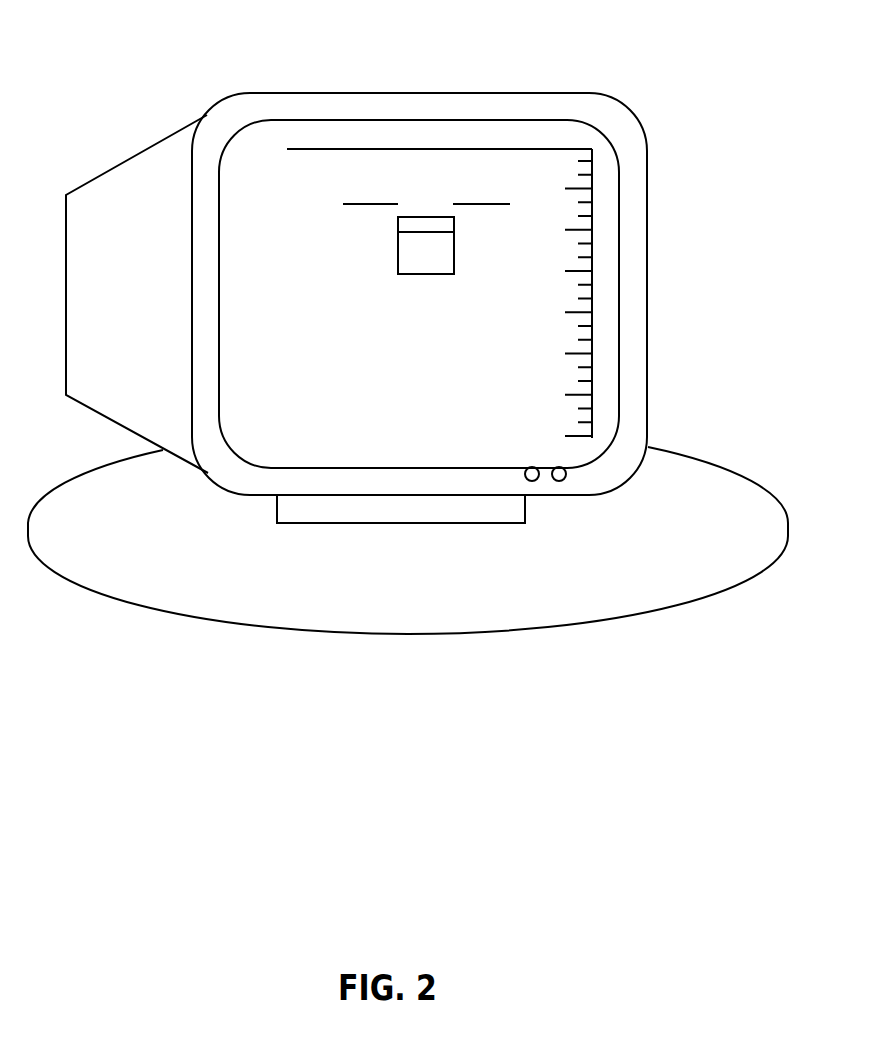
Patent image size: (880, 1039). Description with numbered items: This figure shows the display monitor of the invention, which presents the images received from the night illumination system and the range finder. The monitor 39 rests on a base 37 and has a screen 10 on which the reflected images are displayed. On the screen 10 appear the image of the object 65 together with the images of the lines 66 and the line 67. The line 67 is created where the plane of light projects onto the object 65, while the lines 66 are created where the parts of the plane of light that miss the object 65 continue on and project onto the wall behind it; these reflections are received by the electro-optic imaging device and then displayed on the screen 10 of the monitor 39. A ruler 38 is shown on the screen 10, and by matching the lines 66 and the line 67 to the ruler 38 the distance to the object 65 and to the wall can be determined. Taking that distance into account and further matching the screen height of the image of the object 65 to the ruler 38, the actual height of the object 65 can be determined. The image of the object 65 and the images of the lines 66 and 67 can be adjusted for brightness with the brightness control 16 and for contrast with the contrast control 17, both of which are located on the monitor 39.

The screen 10 is at (522, 260).
The brightness control 16 is at (567, 482).
The contrast control 17 is at (540, 482).
The base 37 is at (703, 495).
The ruler 38 is at (590, 177).
The monitor 39 is at (122, 162).
The object 65 is at (398, 247).
The lines 66 is at (480, 204).
The line 67 is at (440, 233).